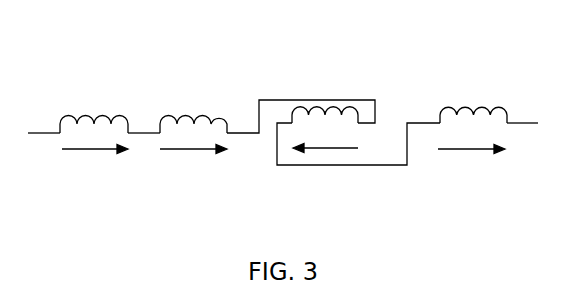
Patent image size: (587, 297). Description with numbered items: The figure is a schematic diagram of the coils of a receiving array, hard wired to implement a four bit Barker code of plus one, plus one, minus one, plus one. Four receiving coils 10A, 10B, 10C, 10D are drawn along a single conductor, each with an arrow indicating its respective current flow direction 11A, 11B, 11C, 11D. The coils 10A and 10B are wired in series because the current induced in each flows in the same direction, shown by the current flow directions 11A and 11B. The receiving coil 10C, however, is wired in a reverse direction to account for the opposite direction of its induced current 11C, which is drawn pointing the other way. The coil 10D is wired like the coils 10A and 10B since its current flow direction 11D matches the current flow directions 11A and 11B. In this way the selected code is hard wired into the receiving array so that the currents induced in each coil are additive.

The receiving coil 10A is at (92, 110).
The receiving coil 10B is at (193, 108).
The receiving coil 10C is at (324, 128).
The receiving coil 10D is at (473, 100).
The current flow direction 11A is at (92, 152).
The current flow direction 11B is at (195, 152).
The current flow direction 11C is at (325, 152).
The current flow direction 11D is at (472, 155).